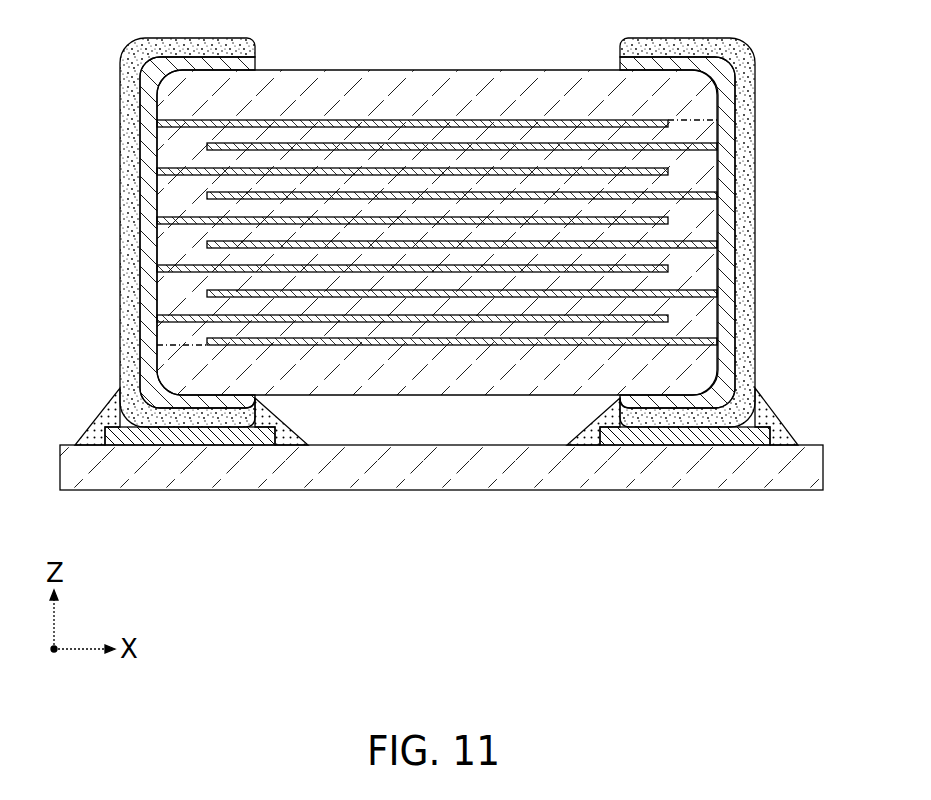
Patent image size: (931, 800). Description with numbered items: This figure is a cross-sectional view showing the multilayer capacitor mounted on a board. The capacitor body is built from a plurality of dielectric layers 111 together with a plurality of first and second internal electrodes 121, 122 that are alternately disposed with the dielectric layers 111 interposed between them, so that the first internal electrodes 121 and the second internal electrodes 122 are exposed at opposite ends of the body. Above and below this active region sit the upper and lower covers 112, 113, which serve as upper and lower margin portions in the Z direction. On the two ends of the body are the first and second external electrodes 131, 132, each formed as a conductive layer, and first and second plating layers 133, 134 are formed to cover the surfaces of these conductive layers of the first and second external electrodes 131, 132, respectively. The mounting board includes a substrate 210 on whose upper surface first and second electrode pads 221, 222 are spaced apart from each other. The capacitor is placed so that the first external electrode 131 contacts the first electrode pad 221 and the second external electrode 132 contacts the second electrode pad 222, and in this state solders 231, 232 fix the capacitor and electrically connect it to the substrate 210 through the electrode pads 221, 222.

The dielectric layer 111 is at (665, 183).
The upper cover 112 is at (345, 103).
The lower cover 113 is at (412, 375).
The first internal electrode 121 is at (426, 120).
The second internal electrode 122 is at (480, 145).
The first external electrode 131 is at (237, 425).
The second external electrode 132 is at (620, 397).
The first plating layer 133 is at (203, 402).
The second plating layer 134 is at (617, 413).
The substrate 210 is at (615, 472).
The first electrode pad 221 is at (187, 440).
The second electrode pad 222 is at (693, 440).
The solder 231 is at (120, 430).
The solder 232 is at (760, 440).